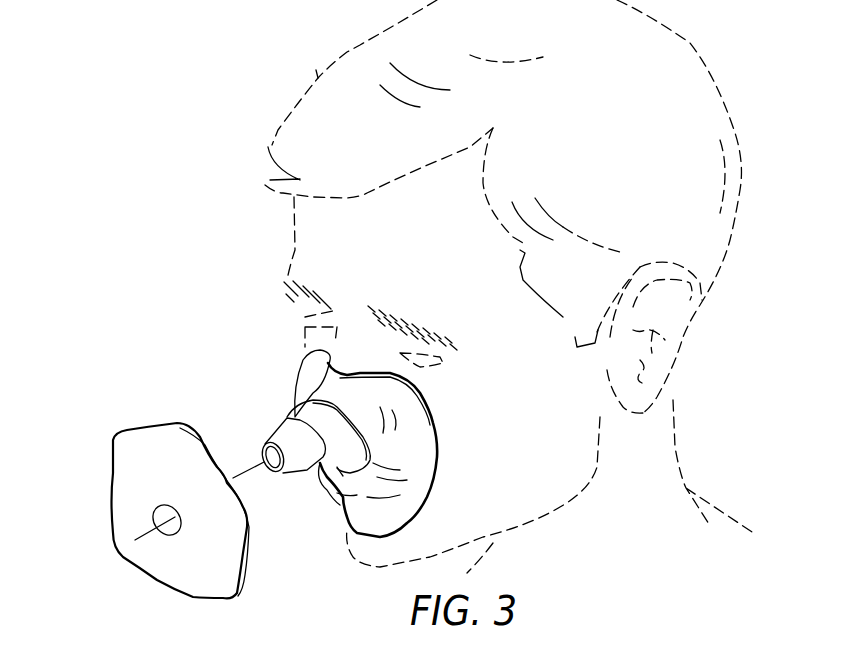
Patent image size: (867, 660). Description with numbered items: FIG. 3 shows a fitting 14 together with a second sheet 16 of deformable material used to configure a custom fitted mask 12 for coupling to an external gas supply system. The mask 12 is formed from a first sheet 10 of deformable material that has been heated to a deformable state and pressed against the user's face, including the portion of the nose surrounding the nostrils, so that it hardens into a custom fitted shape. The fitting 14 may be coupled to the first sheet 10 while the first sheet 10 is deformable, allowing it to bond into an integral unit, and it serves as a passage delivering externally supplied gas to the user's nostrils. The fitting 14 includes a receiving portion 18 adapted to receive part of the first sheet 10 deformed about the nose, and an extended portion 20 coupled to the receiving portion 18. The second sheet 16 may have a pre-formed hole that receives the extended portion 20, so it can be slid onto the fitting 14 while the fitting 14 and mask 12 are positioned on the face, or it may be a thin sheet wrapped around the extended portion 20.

The first sheet 10 is at (423, 437).
The custom fitted mask 12 is at (446, 473).
The fitting 14 is at (127, 495).
The second sheet 16 is at (284, 417).
The receiving portion 18 is at (338, 467).
The extended portion 20 is at (283, 440).